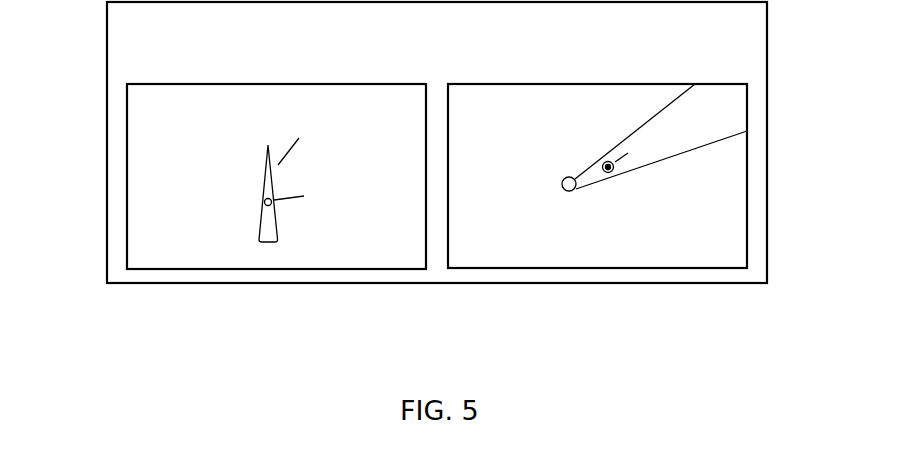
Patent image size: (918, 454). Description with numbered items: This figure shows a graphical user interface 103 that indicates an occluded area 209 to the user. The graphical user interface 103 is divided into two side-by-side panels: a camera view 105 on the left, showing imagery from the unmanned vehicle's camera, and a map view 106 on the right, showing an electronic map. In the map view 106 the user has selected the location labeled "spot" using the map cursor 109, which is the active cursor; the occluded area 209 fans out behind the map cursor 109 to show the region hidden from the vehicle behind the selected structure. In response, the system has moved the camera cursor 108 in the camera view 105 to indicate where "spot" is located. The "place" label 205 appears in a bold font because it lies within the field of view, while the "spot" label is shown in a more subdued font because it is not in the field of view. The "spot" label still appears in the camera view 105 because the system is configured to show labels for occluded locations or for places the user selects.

The graphical user interface 103 is at (419, 52).
The camera view 105 is at (163, 217).
The map view 106 is at (743, 233).
The camera cursor 108 is at (264, 205).
The map cursor 109 is at (611, 173).
The place label 205 is at (288, 127).
The occluded area 209 is at (735, 100).